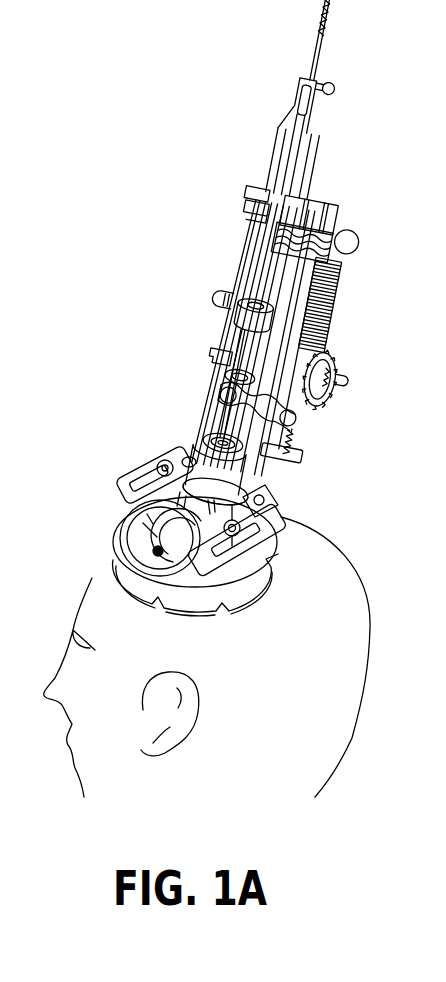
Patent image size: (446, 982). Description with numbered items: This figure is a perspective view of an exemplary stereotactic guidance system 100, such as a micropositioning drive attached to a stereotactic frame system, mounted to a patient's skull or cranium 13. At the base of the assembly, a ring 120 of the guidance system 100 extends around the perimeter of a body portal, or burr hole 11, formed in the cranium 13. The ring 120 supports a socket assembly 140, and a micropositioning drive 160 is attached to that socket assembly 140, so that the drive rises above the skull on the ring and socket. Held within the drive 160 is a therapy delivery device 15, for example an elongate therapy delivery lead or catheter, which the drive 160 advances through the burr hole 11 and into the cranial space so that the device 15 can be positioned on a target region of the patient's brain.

The stereotactic guidance system 100 is at (184, 223).
The micropositioning drive 160 is at (349, 343).
The therapy delivery device 15 is at (212, 428).
The ring 120 is at (108, 524).
The socket assembly 140 is at (273, 518).
The burr hole 11 is at (180, 553).
The cranium 13 is at (322, 600).